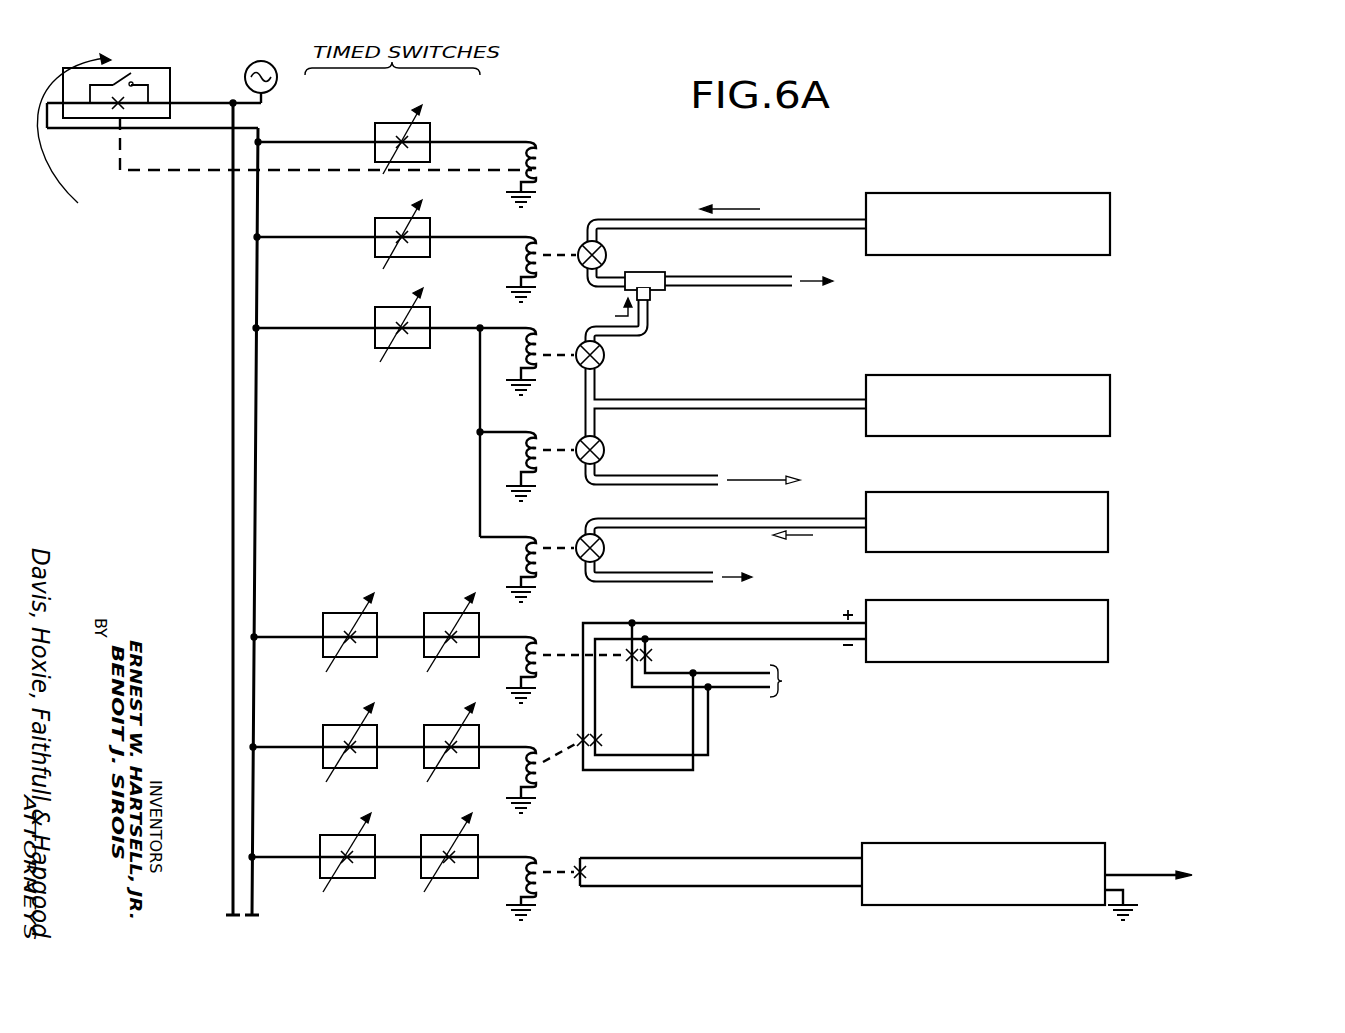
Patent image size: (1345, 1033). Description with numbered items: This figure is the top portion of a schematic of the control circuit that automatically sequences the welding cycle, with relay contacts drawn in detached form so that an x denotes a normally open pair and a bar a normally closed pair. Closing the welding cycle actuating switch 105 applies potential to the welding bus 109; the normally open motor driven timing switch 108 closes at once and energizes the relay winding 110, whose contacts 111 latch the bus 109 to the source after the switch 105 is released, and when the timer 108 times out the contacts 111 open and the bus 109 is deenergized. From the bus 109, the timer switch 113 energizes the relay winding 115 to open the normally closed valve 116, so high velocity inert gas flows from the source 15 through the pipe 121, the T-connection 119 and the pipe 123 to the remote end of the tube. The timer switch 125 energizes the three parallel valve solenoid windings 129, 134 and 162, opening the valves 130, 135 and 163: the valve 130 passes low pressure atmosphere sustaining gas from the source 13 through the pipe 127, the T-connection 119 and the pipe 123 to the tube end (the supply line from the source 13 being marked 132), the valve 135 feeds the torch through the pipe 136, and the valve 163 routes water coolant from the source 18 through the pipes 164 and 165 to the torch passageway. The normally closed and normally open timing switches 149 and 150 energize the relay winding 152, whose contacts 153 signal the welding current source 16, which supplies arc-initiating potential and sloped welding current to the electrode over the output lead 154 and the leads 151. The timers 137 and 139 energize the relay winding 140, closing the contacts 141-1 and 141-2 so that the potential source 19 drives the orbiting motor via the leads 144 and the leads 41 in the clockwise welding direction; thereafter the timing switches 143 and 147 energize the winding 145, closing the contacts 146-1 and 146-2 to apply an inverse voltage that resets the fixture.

The welding cycle actuating switch 105 is at (140, 78).
The contacts 111 is at (118, 108).
The welding bus 109 is at (258, 478).
The motor driven timing switch 108 is at (396, 104).
The timer switch 113 is at (387, 218).
The timer switch 125 is at (372, 349).
The relay winding 110 is at (545, 165).
The relay winding 115 is at (560, 232).
The valve solenoid winding 129 is at (543, 343).
The valve solenoid winding 134 is at (563, 420).
The valve solenoid winding 162 is at (565, 530).
The relay winding 140 is at (560, 625).
The winding 145 is at (538, 773).
The relay winding 152 is at (537, 887).
The valve 116 is at (608, 256).
The valve 130 is at (606, 357).
The valve 135 is at (606, 450).
The valve 163 is at (606, 548).
The pipe 121 is at (788, 217).
The pipe 123 is at (723, 290).
The T-connection 119 is at (657, 292).
The pipe 127 is at (655, 331).
The low velocity gas conduit 132 is at (765, 402).
The pipe 136 is at (688, 472).
The pipe 164 is at (840, 533).
The pipe 165 is at (688, 576).
The high velocity inert gas source 15 is at (1113, 222).
The low pressure inert gas source 13 is at (1112, 395).
The water coolant source 18 is at (1108, 522).
The potential source 19 is at (1108, 632).
The welding current source 16 is at (1043, 843).
The lead to welding electrode 154 is at (1127, 872).
The timer 137 is at (347, 610).
The timer 139 is at (457, 610).
The timing switch 143 is at (347, 722).
The timing switch 147 is at (455, 720).
The timing switch 149 is at (344, 843).
The timing switch 150 is at (456, 843).
The leads 144 is at (775, 628).
The leads 41 is at (760, 680).
The contacts 141-1 is at (628, 651).
The contacts 141-2 is at (655, 655).
The contacts 146-1 is at (577, 740).
The contacts 146-2 is at (604, 741).
The welding current leads 151 is at (707, 884).
The contacts 153 is at (589, 873).